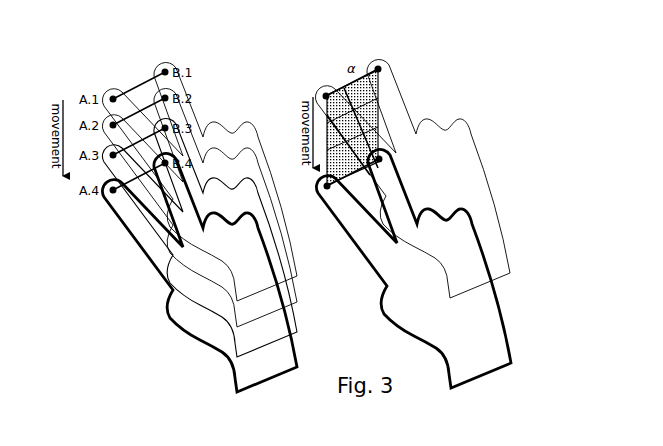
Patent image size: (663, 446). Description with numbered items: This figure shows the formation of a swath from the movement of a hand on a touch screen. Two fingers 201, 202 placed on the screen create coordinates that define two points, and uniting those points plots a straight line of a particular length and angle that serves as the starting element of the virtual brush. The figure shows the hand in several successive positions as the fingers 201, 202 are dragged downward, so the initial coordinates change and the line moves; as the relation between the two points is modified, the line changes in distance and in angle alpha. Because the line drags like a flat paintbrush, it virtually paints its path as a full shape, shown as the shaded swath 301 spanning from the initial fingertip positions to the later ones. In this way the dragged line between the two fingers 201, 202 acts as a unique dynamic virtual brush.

The finger 201 is at (110, 87).
The finger 202 is at (165, 60).
The swath 301 is at (342, 87).